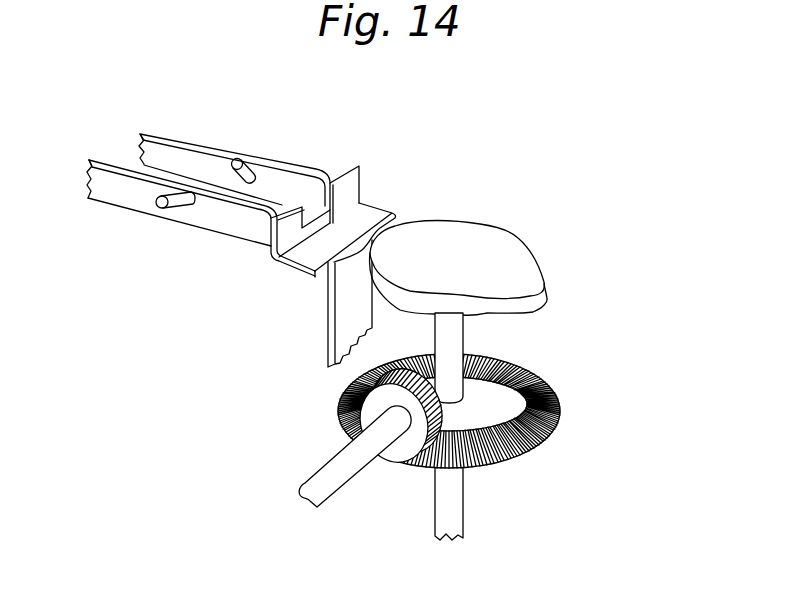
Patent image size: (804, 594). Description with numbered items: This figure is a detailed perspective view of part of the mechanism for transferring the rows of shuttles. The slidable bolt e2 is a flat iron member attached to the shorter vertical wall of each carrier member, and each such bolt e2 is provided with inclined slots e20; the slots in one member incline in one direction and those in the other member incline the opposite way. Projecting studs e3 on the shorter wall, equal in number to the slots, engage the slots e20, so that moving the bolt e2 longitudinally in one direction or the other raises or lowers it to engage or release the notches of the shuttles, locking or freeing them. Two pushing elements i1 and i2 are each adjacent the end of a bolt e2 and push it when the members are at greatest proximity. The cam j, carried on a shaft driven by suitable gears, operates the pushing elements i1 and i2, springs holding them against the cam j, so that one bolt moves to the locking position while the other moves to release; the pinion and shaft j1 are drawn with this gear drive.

The slidable bolt e2 is at (176, 108).
The projecting studs e3 is at (238, 132).
The inclined slots e20 is at (284, 144).
The pushing element i1 is at (273, 226).
The pushing element i2 is at (360, 170).
The cam j is at (535, 300).
The bevel pinion and shaft j1 is at (327, 477).